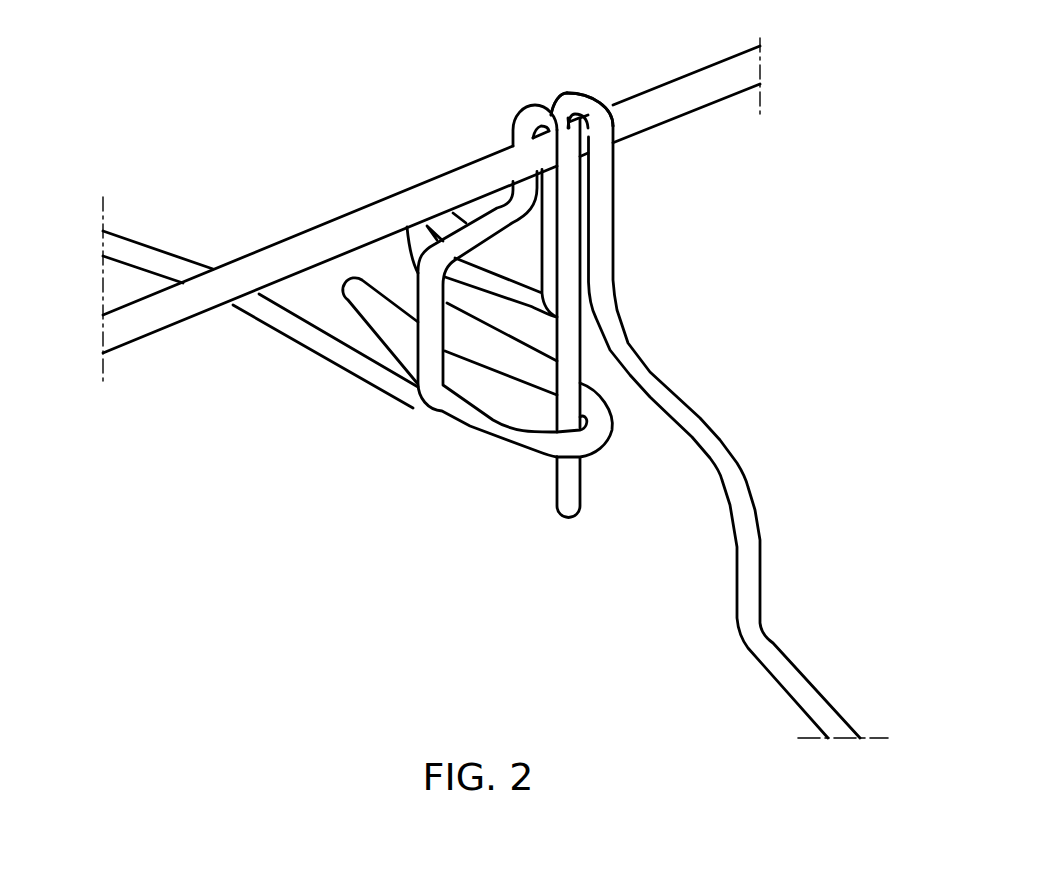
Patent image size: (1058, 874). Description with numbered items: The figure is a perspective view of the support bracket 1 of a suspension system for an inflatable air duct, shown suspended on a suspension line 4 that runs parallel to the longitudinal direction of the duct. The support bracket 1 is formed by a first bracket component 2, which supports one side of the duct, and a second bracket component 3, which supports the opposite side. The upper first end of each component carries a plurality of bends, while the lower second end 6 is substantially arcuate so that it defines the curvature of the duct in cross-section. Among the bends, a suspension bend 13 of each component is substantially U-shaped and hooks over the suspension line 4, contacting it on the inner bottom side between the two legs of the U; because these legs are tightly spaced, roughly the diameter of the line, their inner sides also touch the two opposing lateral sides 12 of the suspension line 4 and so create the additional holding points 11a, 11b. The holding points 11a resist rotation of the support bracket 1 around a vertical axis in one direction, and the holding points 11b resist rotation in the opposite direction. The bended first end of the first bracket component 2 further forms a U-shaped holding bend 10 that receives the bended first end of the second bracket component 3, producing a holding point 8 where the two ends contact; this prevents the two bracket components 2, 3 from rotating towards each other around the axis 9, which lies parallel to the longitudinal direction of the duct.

The support bracket 1 is at (812, 289).
The first bracket component 2 is at (687, 611).
The second bracket component 3 is at (350, 405).
The suspension line 4 is at (431, 210).
The axis 9 is at (333, 222).
The second end 6 is at (827, 700).
The holding point 8 is at (585, 421).
The U-shaped holding bend 10 is at (493, 422).
The additional holding points 11a is at (530, 178).
The additional holding points 11b is at (533, 157).
The opposing lateral sides 12 is at (562, 160).
The suspension bend 13 is at (558, 93).